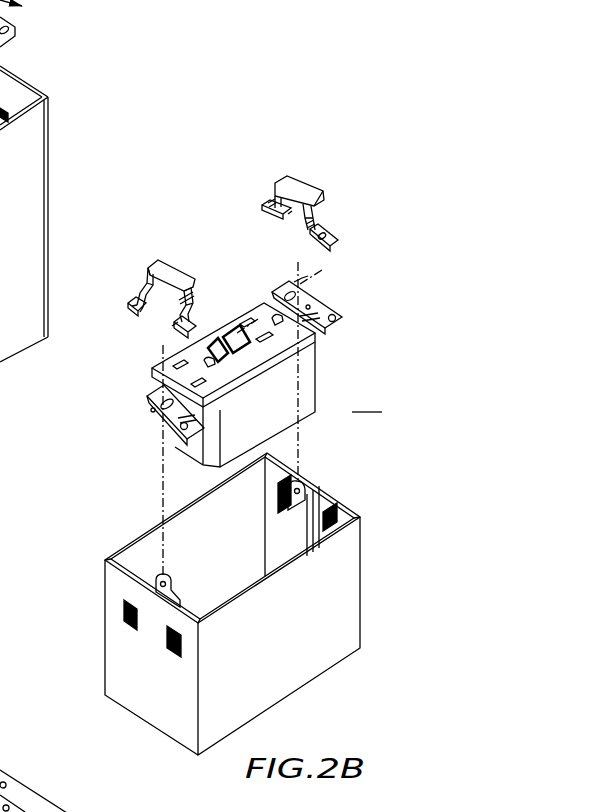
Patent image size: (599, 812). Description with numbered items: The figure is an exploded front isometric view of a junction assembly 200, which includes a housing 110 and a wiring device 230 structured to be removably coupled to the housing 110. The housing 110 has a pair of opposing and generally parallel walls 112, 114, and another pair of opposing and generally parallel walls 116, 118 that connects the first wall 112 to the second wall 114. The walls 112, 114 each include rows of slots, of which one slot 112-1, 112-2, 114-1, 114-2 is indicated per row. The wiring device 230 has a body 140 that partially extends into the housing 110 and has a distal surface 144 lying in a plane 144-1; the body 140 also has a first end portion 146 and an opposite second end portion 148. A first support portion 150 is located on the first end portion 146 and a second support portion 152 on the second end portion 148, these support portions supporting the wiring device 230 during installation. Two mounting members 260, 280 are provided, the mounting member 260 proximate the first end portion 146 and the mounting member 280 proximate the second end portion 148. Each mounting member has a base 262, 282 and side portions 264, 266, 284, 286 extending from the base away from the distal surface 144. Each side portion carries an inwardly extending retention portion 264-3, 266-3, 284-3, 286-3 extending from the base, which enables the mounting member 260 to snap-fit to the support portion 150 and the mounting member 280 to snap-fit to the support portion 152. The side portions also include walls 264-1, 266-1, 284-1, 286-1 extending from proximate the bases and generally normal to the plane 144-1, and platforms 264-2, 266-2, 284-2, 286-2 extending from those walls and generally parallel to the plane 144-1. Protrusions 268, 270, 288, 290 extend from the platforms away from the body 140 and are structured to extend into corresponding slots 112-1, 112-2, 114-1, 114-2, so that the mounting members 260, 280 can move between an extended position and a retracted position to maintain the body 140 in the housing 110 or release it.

The housing 110 is at (200, 588).
The wall 112 is at (159, 593).
The slot 112-1 is at (185, 644).
The slot 112-2 is at (125, 594).
The wall 114 is at (283, 476).
The slot 114-1 is at (331, 517).
The slot 114-2 is at (299, 488).
The wall 116 is at (307, 660).
The wall 118 is at (152, 536).
The body 140 is at (261, 385).
The distal surface 144 is at (246, 373).
The plane 144-1 is at (318, 290).
The first end portion 146 is at (206, 392).
The second end portion 148 is at (300, 340).
The support portion 150 is at (116, 423).
The support portion 152 is at (337, 308).
The junction assembly 200 is at (367, 399).
The wiring device 230 is at (346, 92).
The mounting member 260 is at (166, 265).
The base 262 is at (153, 270).
The side portion 264 is at (166, 298).
The wall 264-1 is at (195, 288).
The platform 264-2 is at (215, 298).
The retention portion 264-3 is at (190, 279).
The side portion 266 is at (124, 264).
The wall 266-1 is at (140, 314).
The platform 266-2 is at (126, 286).
The retention portion 266-3 is at (148, 264).
The protrusion 268 is at (166, 344).
The protrusion 270 is at (115, 305).
The mounting member 280 is at (282, 151).
The base 282 is at (300, 180).
The side portion 284 is at (348, 189).
The wall 284-1 is at (320, 224).
The platform 284-2 is at (322, 250).
The retention portion 284-3 is at (316, 202).
The side portion 286 is at (230, 155).
The wall 286-1 is at (262, 211).
The platform 286-2 is at (266, 205).
The retention portion 286-3 is at (272, 192).
The protrusion 288 is at (334, 224).
The protrusion 290 is at (290, 222).